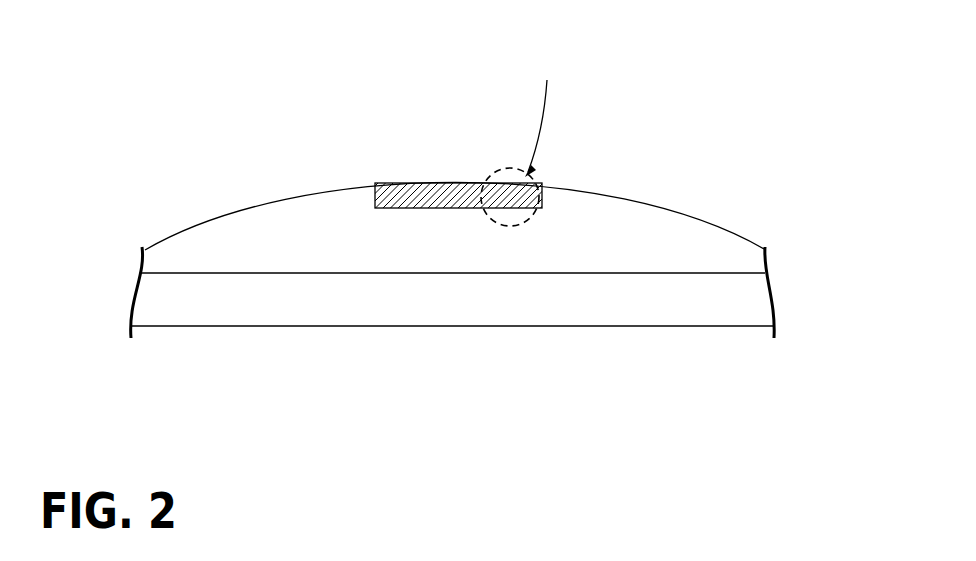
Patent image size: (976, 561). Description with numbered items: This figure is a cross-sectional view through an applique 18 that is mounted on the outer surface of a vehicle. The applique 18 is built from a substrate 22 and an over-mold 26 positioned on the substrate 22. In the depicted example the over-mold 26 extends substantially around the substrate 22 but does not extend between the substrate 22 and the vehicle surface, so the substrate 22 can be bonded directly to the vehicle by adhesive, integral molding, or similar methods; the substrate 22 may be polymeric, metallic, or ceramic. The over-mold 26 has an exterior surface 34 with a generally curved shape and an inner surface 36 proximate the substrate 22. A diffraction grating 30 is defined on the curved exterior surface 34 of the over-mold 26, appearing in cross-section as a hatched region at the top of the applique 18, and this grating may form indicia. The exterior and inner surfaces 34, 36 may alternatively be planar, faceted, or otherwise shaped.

The applique 18 is at (695, 100).
The substrate 22 is at (683, 305).
The over-mold 26 is at (700, 252).
The diffraction grating 30 is at (428, 183).
The exterior surface 34 is at (647, 201).
The inner surface 36 is at (726, 273).